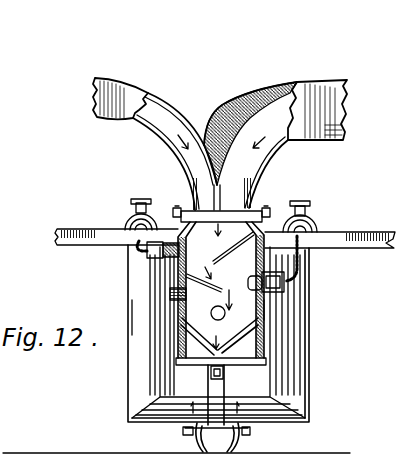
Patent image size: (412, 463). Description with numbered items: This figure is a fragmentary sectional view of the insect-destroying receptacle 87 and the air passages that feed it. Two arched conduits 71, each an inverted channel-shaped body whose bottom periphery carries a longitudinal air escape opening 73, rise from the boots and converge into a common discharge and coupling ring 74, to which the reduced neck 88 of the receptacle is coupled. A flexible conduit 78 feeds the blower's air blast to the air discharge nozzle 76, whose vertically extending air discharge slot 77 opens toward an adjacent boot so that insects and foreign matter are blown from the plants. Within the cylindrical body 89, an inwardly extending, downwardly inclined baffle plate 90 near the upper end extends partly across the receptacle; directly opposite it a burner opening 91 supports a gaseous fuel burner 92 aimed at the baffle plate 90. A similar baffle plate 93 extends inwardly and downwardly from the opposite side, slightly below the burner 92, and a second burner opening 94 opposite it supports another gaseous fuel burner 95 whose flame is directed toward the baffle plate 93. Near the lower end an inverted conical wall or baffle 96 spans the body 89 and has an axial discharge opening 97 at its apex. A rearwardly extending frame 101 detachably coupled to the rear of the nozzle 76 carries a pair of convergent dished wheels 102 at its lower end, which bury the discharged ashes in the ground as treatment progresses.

The arched conduit 71 is at (113, 93).
The air escape opening 73 is at (170, 143).
The flexible conduit 78 is at (238, 107).
The discharge and coupling ring 74 is at (263, 212).
The reduced neck 88 is at (272, 207).
The air discharge slot 77 is at (310, 326).
The air discharge nozzle 76 is at (267, 386).
The baffle plate 90 is at (221, 293).
The receptacle 87 is at (177, 291).
The burner opening 91 is at (222, 255).
The baffle plate 93 is at (202, 297).
The burner opening 94 is at (234, 312).
The gaseous fuel burner 92 is at (148, 258).
The gaseous fuel burner 95 is at (287, 275).
The cylindrical body 89 is at (262, 316).
The inverted conical wall or baffle 96 is at (192, 338).
The axial discharge opening 97 is at (247, 355).
The rearwardly extending frame 101 is at (221, 392).
The convergent dished wheels 102 is at (190, 431).